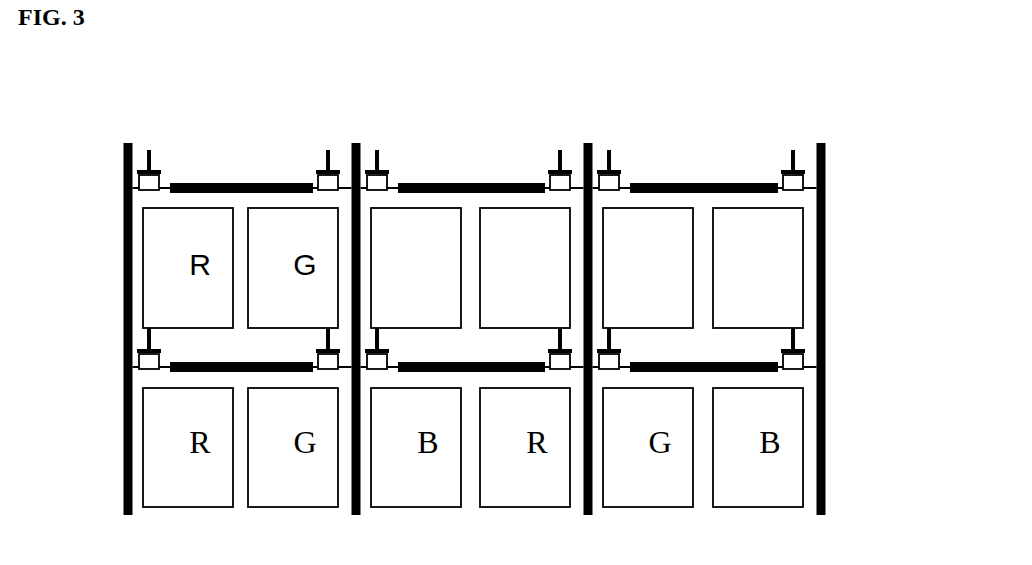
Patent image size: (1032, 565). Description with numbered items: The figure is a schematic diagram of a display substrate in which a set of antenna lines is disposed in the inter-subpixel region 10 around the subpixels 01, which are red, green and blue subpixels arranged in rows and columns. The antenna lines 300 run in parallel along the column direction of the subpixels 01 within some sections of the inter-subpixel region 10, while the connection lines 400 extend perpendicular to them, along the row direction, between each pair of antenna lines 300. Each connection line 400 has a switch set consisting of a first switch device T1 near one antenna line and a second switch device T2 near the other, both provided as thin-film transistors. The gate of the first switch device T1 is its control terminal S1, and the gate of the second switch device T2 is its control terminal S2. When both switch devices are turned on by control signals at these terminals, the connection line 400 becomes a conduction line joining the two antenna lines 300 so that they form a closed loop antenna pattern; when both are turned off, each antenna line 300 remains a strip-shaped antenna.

The antenna line 300 is at (124, 345).
The connection line 400 is at (232, 183).
The subpixel 01 is at (525, 235).
The inter-subpixel region 10 is at (703, 237).
The control terminal of the first switch device S1 is at (149, 162).
The control terminal of the second switch device S2 is at (329, 164).
The first switch device T1 is at (382, 268).
The second switch device T2 is at (565, 268).